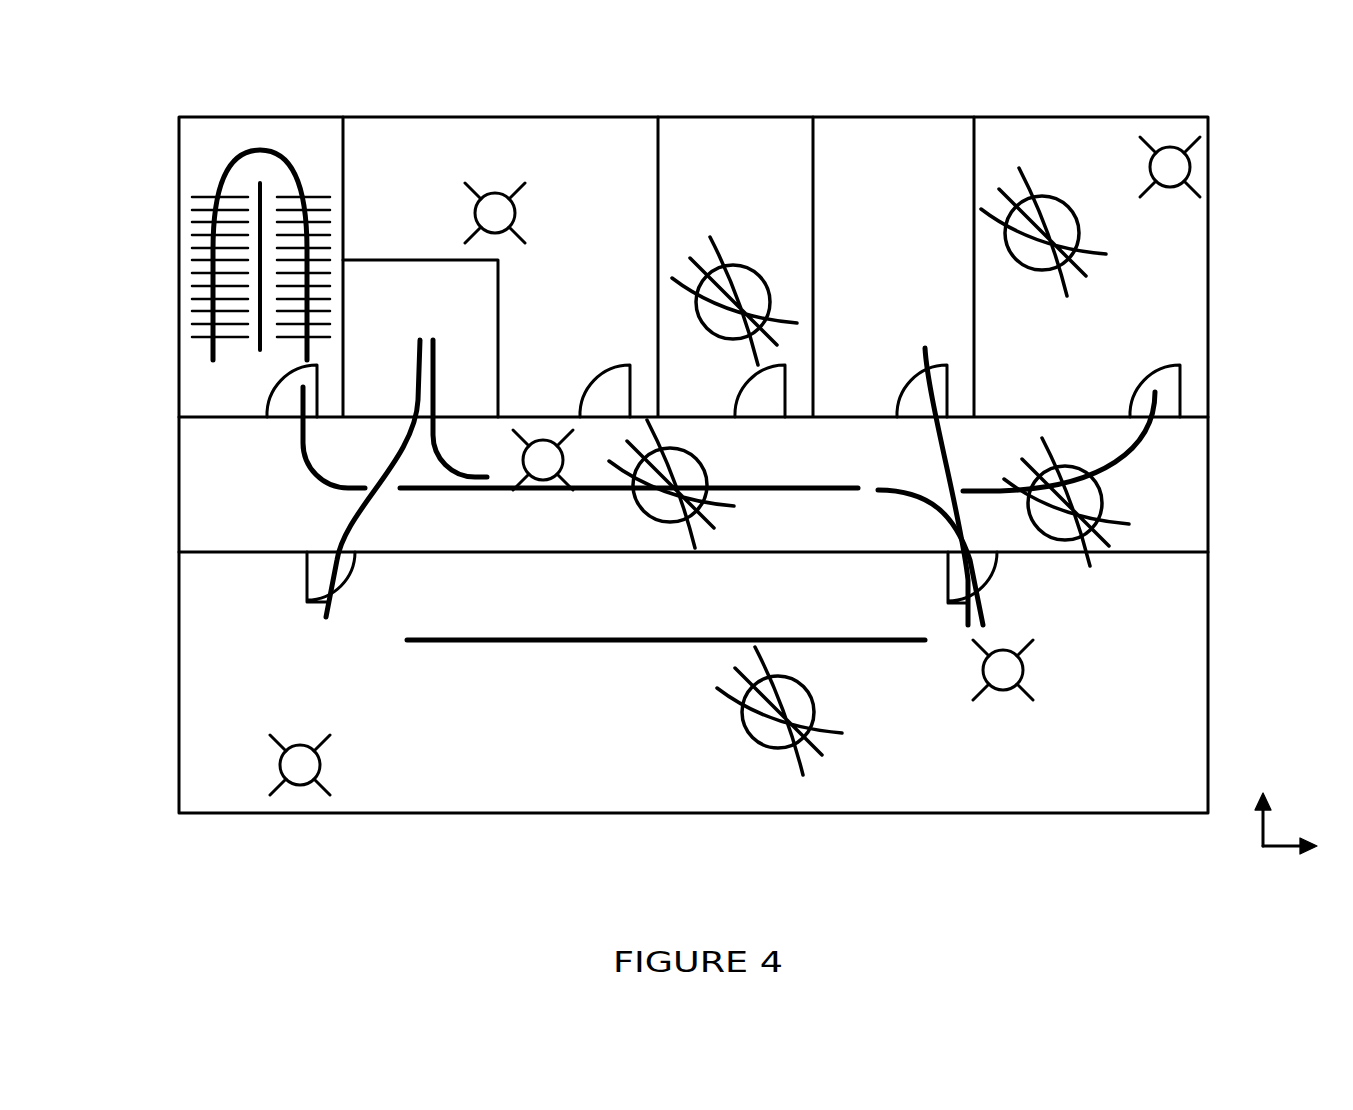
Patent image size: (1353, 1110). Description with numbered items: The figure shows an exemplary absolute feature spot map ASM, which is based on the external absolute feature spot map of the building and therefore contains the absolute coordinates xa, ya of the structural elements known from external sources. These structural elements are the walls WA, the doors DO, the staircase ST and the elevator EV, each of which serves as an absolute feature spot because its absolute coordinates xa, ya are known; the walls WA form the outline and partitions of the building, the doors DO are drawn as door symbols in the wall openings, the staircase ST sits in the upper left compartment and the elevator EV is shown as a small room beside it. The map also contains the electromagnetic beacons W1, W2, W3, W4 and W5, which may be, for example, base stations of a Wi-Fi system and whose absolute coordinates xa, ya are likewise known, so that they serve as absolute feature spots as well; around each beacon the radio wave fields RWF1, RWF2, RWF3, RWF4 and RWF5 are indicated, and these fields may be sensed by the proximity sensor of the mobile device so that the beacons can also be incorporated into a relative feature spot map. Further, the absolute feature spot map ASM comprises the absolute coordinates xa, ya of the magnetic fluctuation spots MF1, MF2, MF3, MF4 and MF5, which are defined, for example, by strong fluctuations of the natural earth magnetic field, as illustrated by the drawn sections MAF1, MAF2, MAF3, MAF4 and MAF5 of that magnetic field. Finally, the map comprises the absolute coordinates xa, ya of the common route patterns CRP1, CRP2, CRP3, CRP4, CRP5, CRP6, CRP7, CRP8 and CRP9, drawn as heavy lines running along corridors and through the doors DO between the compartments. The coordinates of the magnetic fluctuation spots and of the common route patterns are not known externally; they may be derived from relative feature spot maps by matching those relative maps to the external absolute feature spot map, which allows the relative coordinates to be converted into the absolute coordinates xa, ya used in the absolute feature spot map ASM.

The absolute feature spot map ASM is at (1252, 104).
The walls WA is at (813, 156).
The doors DO is at (1140, 380).
The elevator EV is at (498, 333).
The staircase ST is at (313, 200).
The common route pattern CRP1 is at (258, 150).
The common route pattern CRP2 is at (303, 462).
The common route pattern CRP3 is at (795, 486).
The common route pattern CRP4 is at (905, 473).
The common route pattern CRP5 is at (415, 372).
The common route pattern CRP6 is at (925, 348).
The common route pattern CRP7 is at (970, 489).
The common route pattern CRP8 is at (545, 643).
The characteristic route path 9 CRP9 is at (433, 340).
The electromagnetic beacon W1 is at (523, 462).
The electromagnetic beacon W2 is at (1024, 670).
The electromagnetic beacon W3 is at (475, 215).
The electromagnetic beacon W4 is at (1150, 168).
The window 5 W5 is at (322, 764).
The radio wave field RWF1 is at (521, 483).
The radio wave field RWF2 is at (1022, 700).
The radio wave field RWF3 is at (468, 188).
The radio wave field RWF4 is at (1150, 190).
The radiating wall feature 5 RWF5 is at (272, 740).
The magnetic fluctuation spot MF1 is at (692, 448).
The magnetic fluctuation spot MF2 is at (760, 266).
The magnetic fluctuation spot MF3 is at (1010, 262).
The magnetic fluctuation spot MF4 is at (1030, 505).
The magnetic fluctuation spot MF5 is at (745, 725).
The section of the magnetic field MAF1 is at (790, 503).
The section of the magnetic field MAF2 is at (706, 255).
The section of the magnetic field MAF3 is at (1105, 262).
The section of the magnetic field MAF4 is at (1116, 522).
The section of the magnetic field MAF5 is at (843, 733).
The absolute coordinate xa is at (1296, 858).
The absolute coordinate ya is at (1251, 813).